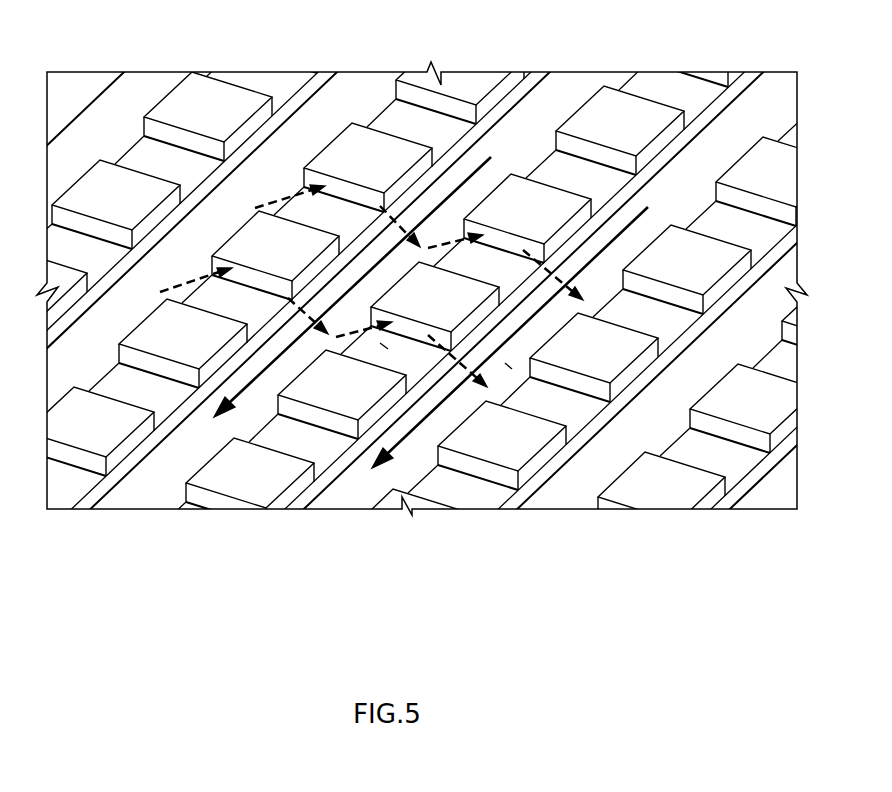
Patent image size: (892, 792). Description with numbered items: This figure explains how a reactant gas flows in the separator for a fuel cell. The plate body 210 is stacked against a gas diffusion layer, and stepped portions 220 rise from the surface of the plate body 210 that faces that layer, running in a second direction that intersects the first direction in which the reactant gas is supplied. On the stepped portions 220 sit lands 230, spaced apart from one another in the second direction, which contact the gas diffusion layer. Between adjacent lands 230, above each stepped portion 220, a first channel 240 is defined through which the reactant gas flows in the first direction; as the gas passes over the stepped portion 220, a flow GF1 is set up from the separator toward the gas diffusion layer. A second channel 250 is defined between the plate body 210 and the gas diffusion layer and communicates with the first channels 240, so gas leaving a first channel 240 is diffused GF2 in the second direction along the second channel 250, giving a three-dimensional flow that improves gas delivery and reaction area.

The plate body 210 is at (565, 496).
The stepped portion 220 is at (172, 422).
The land 230 is at (560, 232).
The first channel 240 is at (380, 343).
The second channel 250 is at (505, 363).
The flow of the reactant gas GF1 is at (274, 195).
The diffused flow of the reactant gas GF2 is at (264, 388).